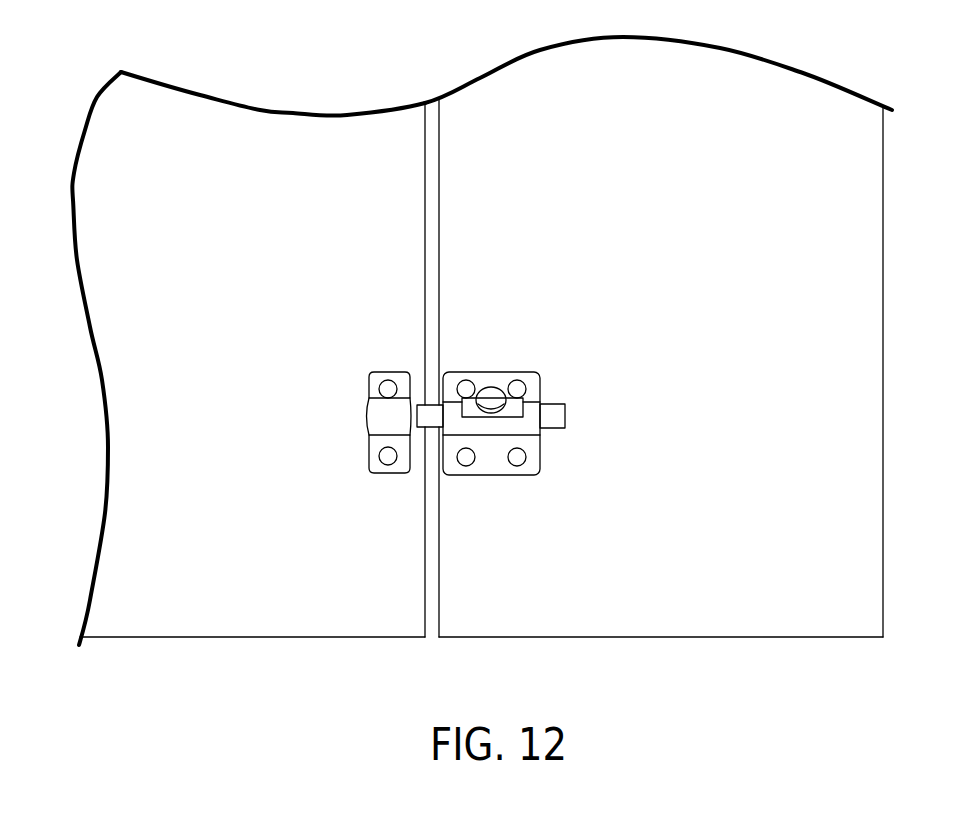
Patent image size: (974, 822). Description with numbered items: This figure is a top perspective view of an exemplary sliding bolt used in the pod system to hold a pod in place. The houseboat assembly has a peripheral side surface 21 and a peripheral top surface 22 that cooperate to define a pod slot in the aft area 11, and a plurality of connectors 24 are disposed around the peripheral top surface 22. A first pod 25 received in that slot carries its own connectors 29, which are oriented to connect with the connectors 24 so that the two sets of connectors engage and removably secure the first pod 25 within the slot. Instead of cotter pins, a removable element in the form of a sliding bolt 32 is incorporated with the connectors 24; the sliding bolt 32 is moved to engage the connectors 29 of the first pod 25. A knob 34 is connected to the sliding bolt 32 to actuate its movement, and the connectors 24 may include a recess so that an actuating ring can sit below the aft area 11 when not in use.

The aft area 11 is at (855, 585).
The peripheral side surface 21 is at (438, 172).
The peripheral top surface 22 is at (558, 445).
The connectors 24 is at (582, 415).
The first pod 25 is at (138, 610).
The connectors 29 is at (355, 415).
The sliding bolt 32 is at (553, 415).
The knob 34 is at (489, 398).